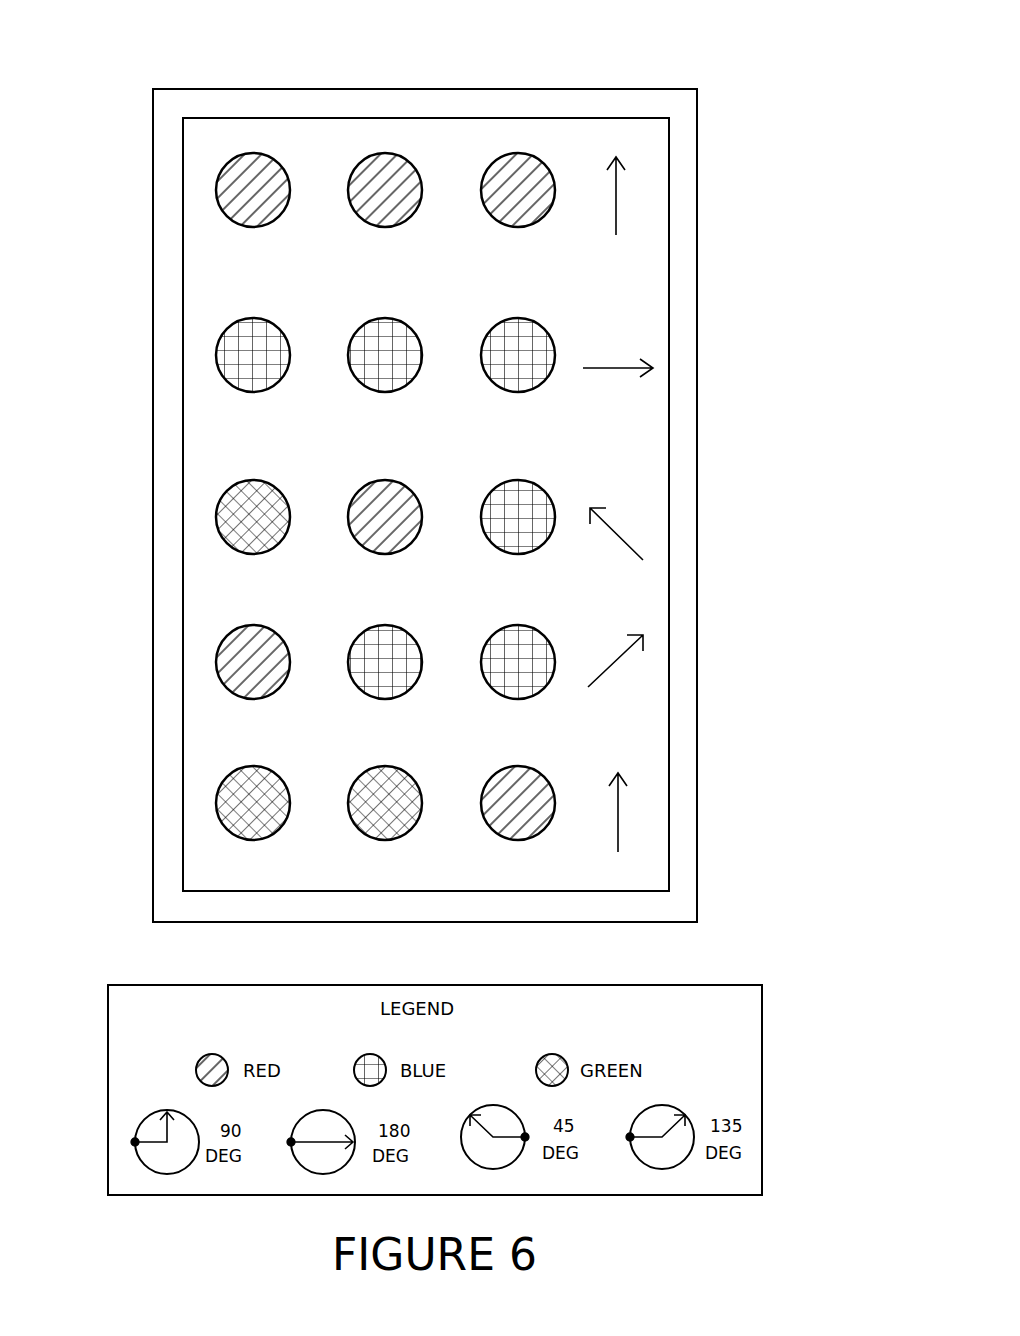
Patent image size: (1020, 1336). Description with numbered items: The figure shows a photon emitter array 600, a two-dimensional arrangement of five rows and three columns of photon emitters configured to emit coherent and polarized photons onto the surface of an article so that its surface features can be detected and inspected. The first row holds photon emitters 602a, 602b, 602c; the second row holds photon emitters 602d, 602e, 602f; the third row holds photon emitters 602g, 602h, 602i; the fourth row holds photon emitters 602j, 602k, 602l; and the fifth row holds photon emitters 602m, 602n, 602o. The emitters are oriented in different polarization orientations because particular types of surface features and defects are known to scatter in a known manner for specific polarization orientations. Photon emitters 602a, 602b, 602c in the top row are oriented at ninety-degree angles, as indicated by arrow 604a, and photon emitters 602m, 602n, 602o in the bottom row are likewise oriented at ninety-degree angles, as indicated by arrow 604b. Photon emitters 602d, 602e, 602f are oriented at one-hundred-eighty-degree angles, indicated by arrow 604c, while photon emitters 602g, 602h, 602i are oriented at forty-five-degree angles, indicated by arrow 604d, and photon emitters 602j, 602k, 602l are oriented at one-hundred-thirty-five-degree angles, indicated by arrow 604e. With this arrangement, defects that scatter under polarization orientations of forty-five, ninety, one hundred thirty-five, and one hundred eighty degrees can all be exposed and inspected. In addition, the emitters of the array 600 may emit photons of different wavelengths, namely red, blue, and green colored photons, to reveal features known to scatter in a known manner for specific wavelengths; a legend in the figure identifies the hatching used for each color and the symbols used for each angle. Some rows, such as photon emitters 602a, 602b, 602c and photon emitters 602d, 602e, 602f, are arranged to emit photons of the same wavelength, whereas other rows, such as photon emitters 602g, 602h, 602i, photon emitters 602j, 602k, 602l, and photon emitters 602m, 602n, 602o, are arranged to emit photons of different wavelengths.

The photon emitter array 600 is at (103, 145).
The photon emitter 602a is at (245, 141).
The photon emitter 602b is at (380, 141).
The photon emitter 602c is at (512, 141).
The photon emitter 602d is at (246, 310).
The photon emitter 602e is at (378, 310).
The photon emitter 602f is at (507, 310).
The photon emitter 602g is at (237, 470).
The photon emitter 602h is at (368, 470).
The photon emitter 602i is at (500, 470).
The photon emitter 602j is at (238, 618).
The photon emitter 602k is at (370, 618).
The photon emitter 602l is at (498, 618).
The photon emitter 602m is at (240, 758).
The photon emitter 602n is at (367, 758).
The photon emitter 602o is at (498, 758).
The arrow 604a is at (633, 193).
The arrow 604b is at (636, 810).
The arrow 604c is at (615, 350).
The arrow 604d is at (630, 516).
The arrow 604e is at (640, 668).